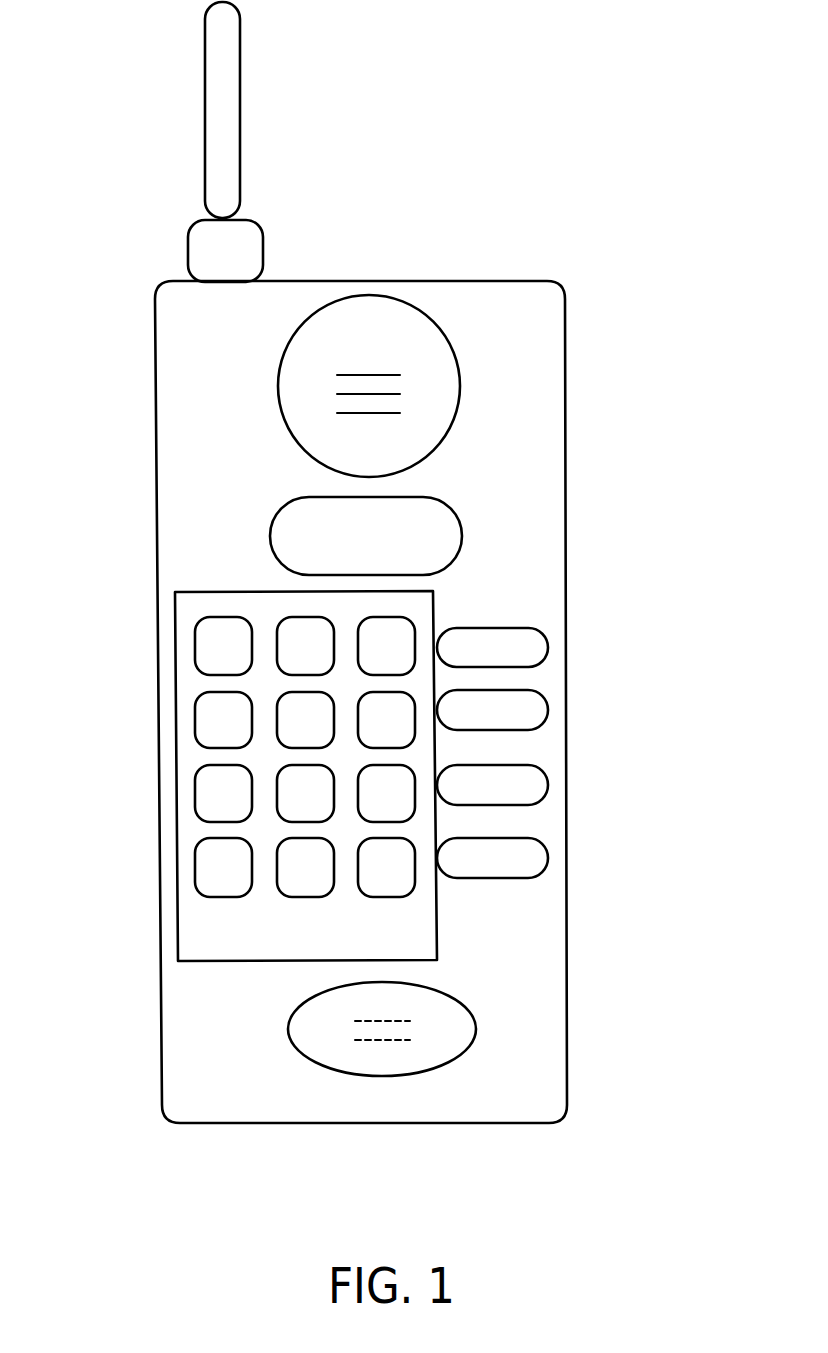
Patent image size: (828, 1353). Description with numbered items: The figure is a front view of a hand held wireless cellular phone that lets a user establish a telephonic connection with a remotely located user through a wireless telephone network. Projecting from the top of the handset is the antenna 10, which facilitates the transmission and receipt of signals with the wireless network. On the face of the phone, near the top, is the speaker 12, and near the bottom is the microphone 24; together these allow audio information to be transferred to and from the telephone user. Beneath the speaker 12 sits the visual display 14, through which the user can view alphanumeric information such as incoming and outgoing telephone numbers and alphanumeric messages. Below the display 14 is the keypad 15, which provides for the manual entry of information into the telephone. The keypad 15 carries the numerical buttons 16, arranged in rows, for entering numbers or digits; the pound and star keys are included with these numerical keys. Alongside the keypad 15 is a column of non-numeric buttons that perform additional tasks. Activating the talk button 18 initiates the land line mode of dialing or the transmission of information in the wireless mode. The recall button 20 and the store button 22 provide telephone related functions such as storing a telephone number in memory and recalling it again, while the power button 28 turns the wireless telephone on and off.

The antenna 10 is at (238, 107).
The speaker 12 is at (460, 383).
The visual display 14 is at (462, 537).
The keypad 15 is at (245, 780).
The numerical buttons 16 is at (193, 645).
The talk button 18 is at (545, 642).
The recall button 20 is at (545, 705).
The store button 22 is at (545, 778).
The power button 28 is at (545, 855).
The microphone 24 is at (405, 1073).